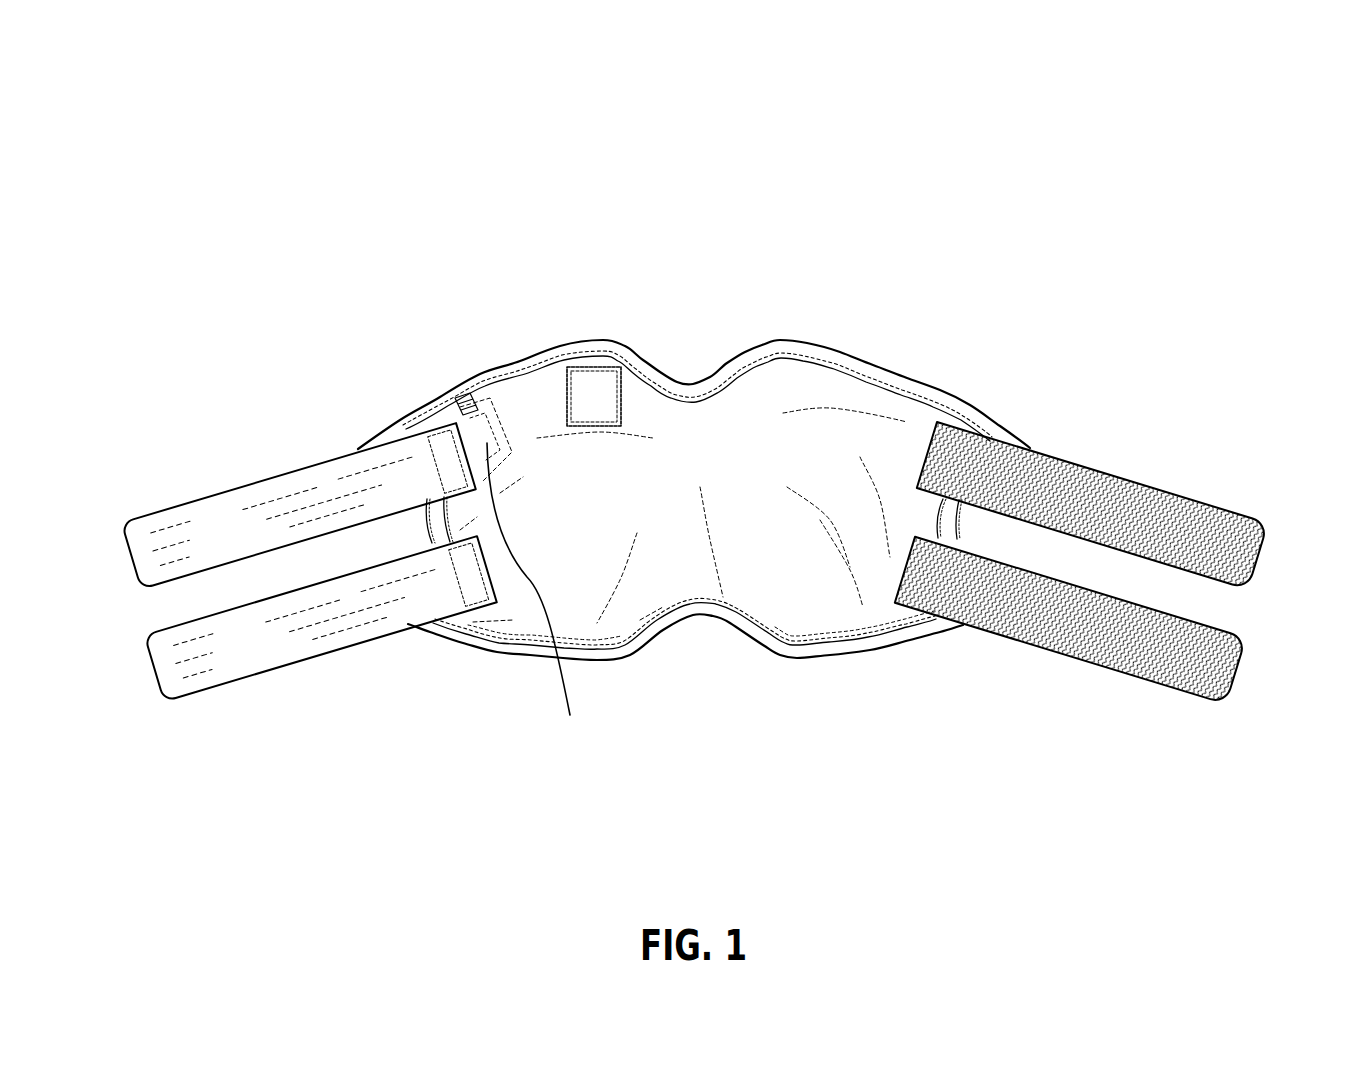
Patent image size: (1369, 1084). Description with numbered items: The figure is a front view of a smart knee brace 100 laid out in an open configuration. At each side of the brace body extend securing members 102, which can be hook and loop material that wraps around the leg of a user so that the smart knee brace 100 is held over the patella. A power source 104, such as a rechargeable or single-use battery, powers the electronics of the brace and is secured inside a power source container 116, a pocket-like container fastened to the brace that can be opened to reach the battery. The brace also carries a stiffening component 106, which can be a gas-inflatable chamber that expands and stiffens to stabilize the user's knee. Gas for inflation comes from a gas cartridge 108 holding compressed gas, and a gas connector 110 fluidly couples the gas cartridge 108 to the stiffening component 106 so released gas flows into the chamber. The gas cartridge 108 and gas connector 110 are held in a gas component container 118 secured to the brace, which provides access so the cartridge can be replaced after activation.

The smart knee brace 100 is at (375, 190).
The securing member 102 is at (158, 574).
The power source 104 is at (593, 383).
The stiffening component 106 is at (750, 607).
The gas cartridge 108 is at (538, 597).
The gas connector 110 is at (468, 408).
The power source container 116 is at (585, 367).
The gas component container 118 is at (491, 400).